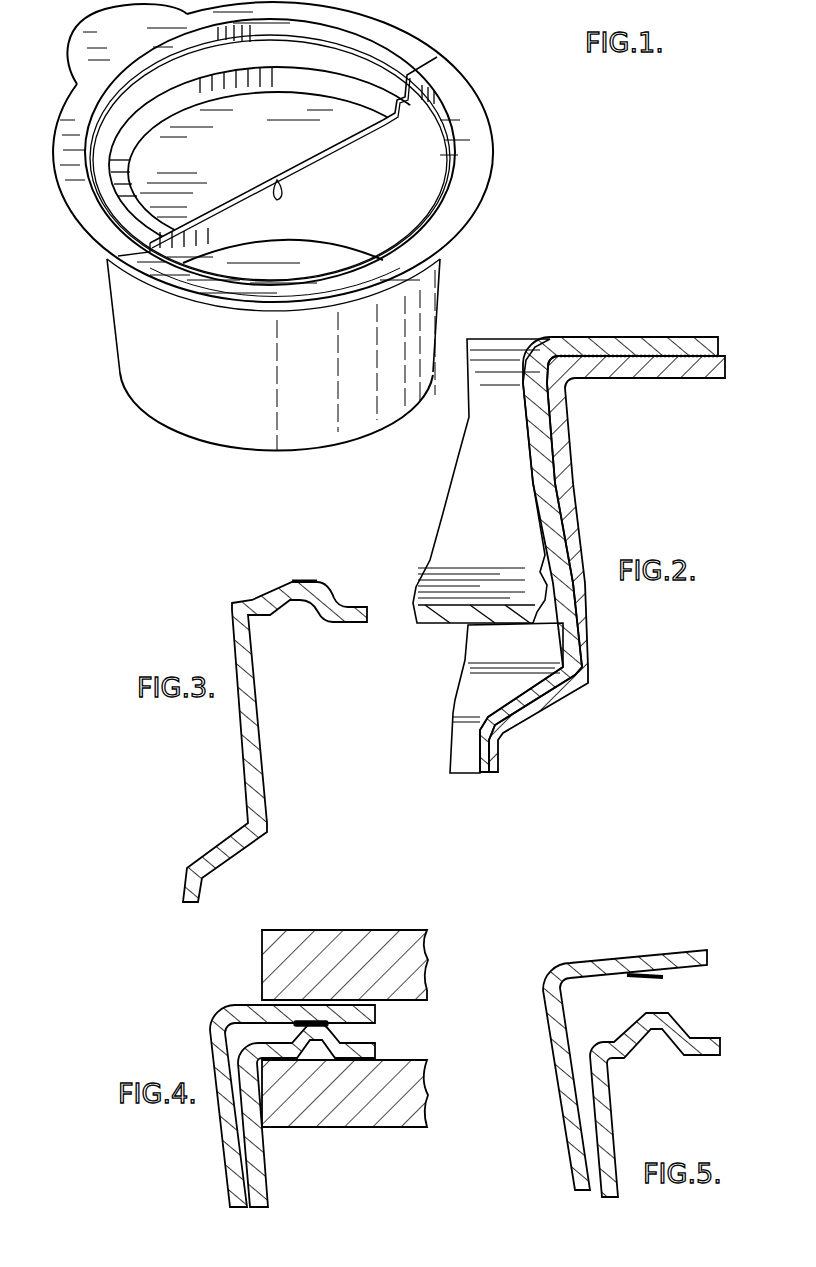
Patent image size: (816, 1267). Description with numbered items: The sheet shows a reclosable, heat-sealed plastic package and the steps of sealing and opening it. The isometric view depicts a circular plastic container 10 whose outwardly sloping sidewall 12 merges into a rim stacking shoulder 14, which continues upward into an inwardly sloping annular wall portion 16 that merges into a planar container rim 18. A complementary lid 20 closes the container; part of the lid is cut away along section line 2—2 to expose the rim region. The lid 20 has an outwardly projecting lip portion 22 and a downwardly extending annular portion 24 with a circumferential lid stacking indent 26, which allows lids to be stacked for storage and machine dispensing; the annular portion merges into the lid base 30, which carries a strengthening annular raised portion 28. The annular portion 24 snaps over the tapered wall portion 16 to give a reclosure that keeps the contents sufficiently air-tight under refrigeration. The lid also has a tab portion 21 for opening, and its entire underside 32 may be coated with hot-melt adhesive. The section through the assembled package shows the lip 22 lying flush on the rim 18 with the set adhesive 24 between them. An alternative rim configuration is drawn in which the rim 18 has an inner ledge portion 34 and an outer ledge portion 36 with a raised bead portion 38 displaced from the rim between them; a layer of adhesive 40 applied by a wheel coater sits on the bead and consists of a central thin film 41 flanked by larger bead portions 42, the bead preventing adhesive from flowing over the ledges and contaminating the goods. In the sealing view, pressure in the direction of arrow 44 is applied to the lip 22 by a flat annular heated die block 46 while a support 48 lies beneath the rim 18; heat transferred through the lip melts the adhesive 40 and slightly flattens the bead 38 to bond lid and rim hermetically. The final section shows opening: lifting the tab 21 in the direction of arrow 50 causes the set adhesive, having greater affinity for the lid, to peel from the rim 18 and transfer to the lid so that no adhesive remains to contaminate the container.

In FIG. 1, the section line 2— 2 is at (35, 120).
In FIG. 1, the container 10 is at (100, 348).
In FIG. 4, the container 10 is at (270, 1183).
In FIG. 1, the outwardly sloping sidewall 12 is at (428, 295).
In FIG. 2, the outwardly sloping sidewall 12 is at (428, 295).
In FIG. 1, the rim stacking shoulder 14 is at (427, 118).
In FIG. 2, the rim stacking shoulder 14 is at (537, 703).
In FIG. 3, the rim stacking shoulder 14 is at (227, 852).
In FIG. 1, the inwardly sloping annular wall portion 16 is at (450, 130).
In FIG. 2, the inwardly sloping annular wall portion 16 is at (567, 493).
In FIG. 3, the inwardly sloping annular wall portion 16 is at (257, 720).
In FIG. 1, the container rim 18 is at (480, 160).
In FIG. 2, the container rim 18 is at (685, 370).
In FIG. 3, the container rim 18 is at (340, 623).
In FIG. 4, the container rim 18 is at (373, 1050).
In FIG. 5, the container rim 18 is at (712, 1055).
In FIG. 1, the lid 20 is at (312, 37).
In FIG. 2, the lid 20 is at (558, 338).
In FIG. 4, the lid 20 is at (207, 1003).
In FIG. 1, the lid tab portion 21 is at (127, 38).
In FIG. 1, the lip portion 22 is at (398, 40).
In FIG. 2, the lip portion 22 is at (615, 338).
In FIG. 4, the lip portion 22 is at (373, 1012).
In FIG. 5, the lip portion 22 is at (693, 950).
In FIG. 1, the downwardly extending annular portion 24 is at (395, 63).
In FIG. 2, the downwardly extending annular portion 24 is at (667, 352).
In FIG. 1, the lid stacking indent 26 is at (412, 100).
In FIG. 2, the lid stacking indent 26 is at (540, 582).
In FIG. 1, the strengthening annular raised portion 28 is at (320, 67).
In FIG. 1, the lid base 30 is at (246, 154).
In FIG. 1, the underside of the lid 32 is at (277, 182).
In FIG. 3, the inner ledge portion 34 is at (253, 598).
In FIG. 3, the outer ledge portion 36 is at (360, 605).
In FIG. 3, the raised bead portion 38 is at (302, 600).
In FIG. 4, the raised bead portion 38 is at (310, 1040).
In FIG. 5, the raised bead portion 38 is at (658, 1033).
In FIG. 3, the layer of adhesive 40 is at (302, 578).
In FIG. 4, the layer of adhesive 40 is at (287, 1007).
In FIG. 5, the layer of adhesive 40 is at (652, 975).
In FIG. 3, the central film of adhesive 41 is at (313, 580).
In FIG. 3, the bead portions of adhesive 42 is at (287, 582).
In FIG. 4, the arrow 44 is at (313, 923).
In FIG. 4, the heated die block 46 is at (392, 945).
In FIG. 4, the support 48 is at (417, 1113).
In FIG. 5, the arrow 50 is at (640, 940).